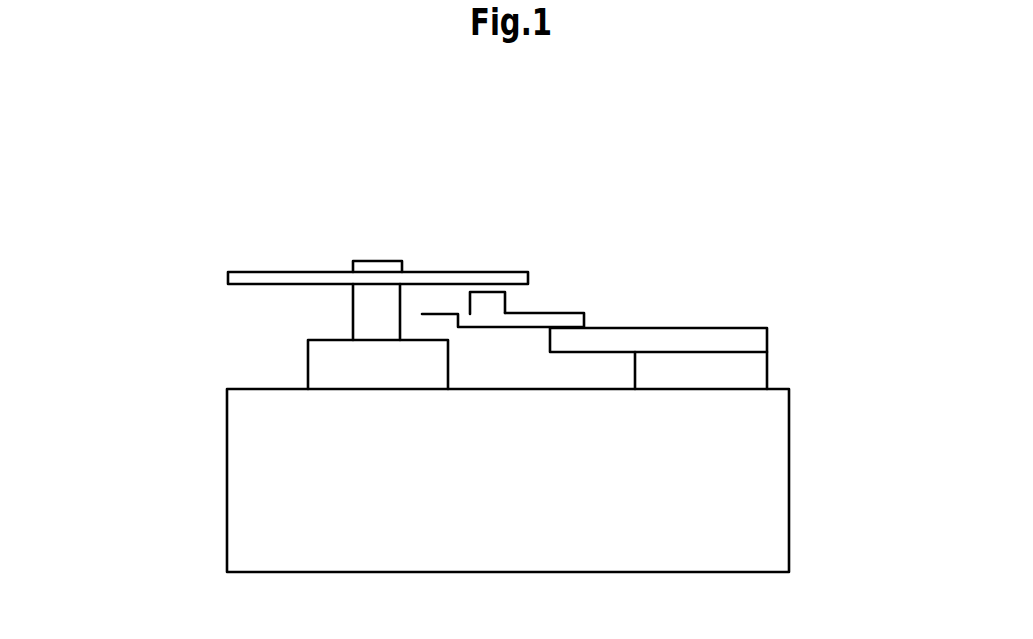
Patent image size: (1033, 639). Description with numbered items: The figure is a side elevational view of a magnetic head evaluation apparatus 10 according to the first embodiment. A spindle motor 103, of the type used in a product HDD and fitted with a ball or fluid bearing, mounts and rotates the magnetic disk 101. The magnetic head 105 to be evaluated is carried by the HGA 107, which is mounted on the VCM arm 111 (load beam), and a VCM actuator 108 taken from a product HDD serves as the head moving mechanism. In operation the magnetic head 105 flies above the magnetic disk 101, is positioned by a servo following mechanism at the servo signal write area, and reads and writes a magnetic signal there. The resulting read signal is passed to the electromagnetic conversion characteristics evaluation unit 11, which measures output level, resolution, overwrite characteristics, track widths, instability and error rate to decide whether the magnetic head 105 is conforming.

The magnetic head evaluation apparatus 10 is at (338, 237).
The electromagnetic conversion characteristics evaluation unit 11 is at (318, 483).
The magnetic disk 101 is at (258, 271).
The spindle motor 103 is at (331, 358).
The magnetic head 105 is at (505, 290).
The HGA 107 is at (565, 313).
The VCM arm 111 is at (660, 340).
The VCM actuator 108 is at (742, 375).